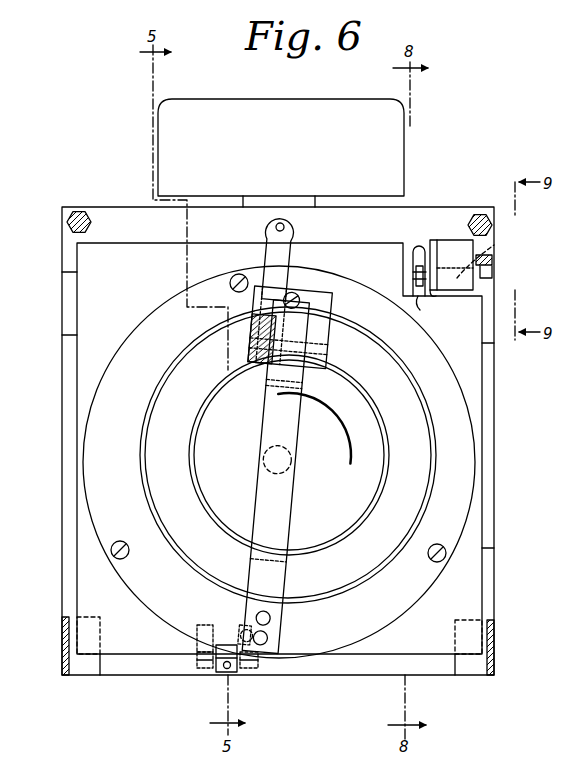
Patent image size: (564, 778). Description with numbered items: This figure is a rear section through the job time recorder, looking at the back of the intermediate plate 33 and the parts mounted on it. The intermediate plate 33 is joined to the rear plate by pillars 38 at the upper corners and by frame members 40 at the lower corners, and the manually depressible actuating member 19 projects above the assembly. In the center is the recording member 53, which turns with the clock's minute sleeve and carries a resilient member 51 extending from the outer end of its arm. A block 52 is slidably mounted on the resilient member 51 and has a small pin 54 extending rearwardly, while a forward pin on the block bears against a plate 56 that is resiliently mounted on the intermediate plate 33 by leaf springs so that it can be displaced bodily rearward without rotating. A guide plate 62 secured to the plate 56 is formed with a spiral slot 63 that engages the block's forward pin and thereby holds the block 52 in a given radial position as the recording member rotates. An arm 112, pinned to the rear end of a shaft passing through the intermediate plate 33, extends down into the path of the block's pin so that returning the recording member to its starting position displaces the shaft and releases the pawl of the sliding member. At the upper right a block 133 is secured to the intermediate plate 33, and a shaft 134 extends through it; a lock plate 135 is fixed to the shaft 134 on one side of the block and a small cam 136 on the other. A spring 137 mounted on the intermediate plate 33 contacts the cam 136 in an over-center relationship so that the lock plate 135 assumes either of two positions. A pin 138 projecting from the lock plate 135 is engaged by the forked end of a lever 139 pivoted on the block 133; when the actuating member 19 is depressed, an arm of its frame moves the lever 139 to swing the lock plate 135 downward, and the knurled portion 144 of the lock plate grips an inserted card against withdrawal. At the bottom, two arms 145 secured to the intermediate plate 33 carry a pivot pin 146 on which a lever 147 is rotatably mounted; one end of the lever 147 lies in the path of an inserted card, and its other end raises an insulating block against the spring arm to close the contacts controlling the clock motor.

The manually depressible actuating member 19 is at (253, 108).
The intermediate plate 33 is at (62, 255).
The pillars 38 is at (80, 211).
The frame members 40 is at (62, 636).
The resilient member 51 is at (302, 530).
The block 52 is at (330, 338).
The recording member 53 is at (318, 456).
The pin 54 is at (306, 296).
The plate 56 is at (472, 398).
The guide plate 62 is at (434, 449).
The spiral slot 63 is at (395, 483).
The arm 112 is at (268, 256).
The block 133 is at (452, 248).
The shaft 134 is at (494, 246).
The lock plate 135 is at (420, 250).
The cam 136 is at (494, 276).
The spring 137 is at (493, 259).
The pin 138 is at (416, 273).
The lever 139 is at (426, 300).
The knurled portion 144 is at (438, 296).
The arms 145 is at (205, 668).
The pivot pin 146 is at (200, 650).
The lever 147 is at (230, 672).